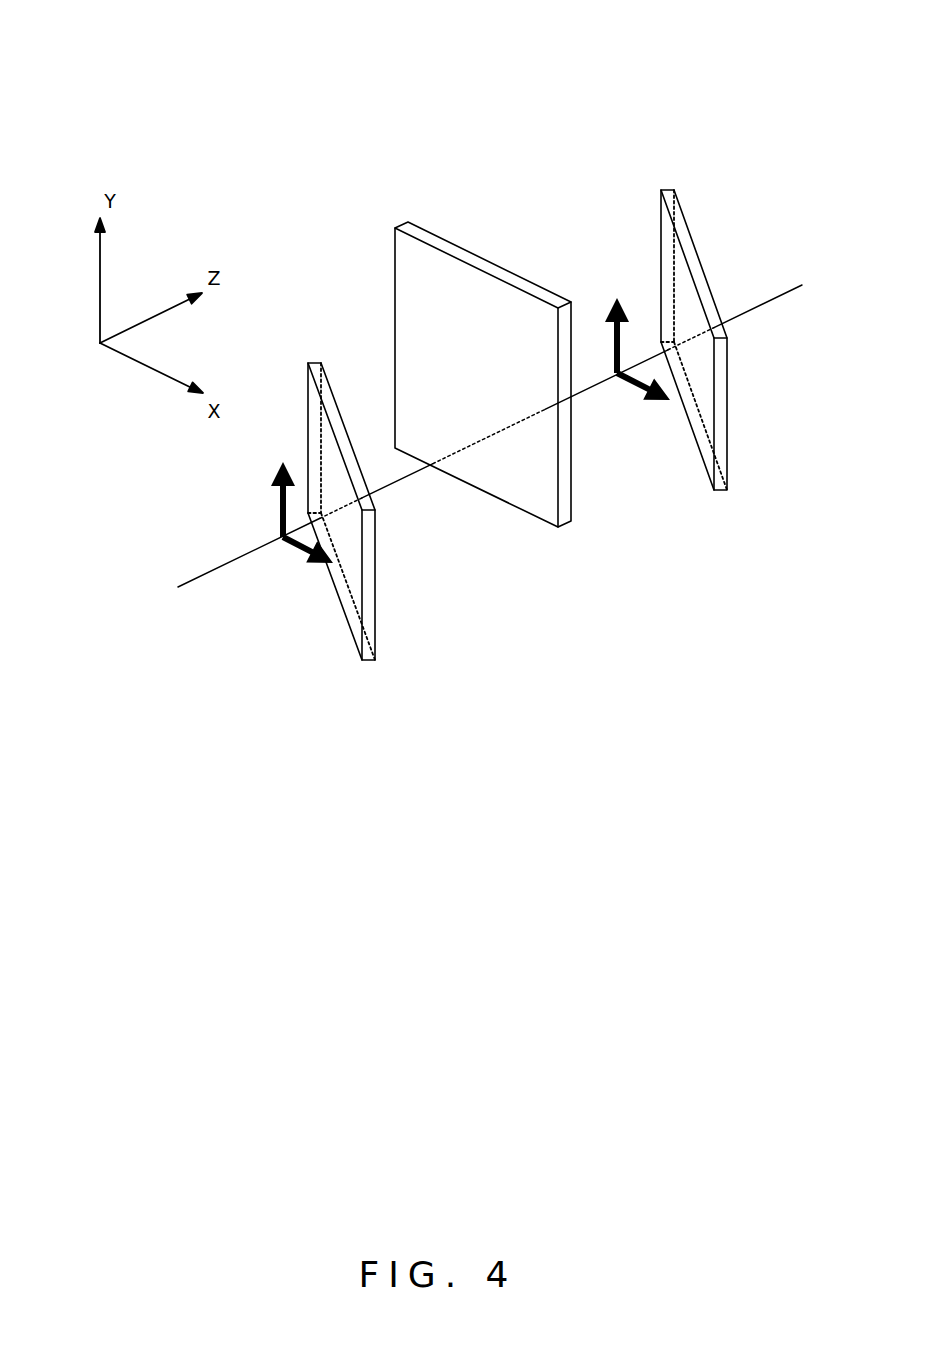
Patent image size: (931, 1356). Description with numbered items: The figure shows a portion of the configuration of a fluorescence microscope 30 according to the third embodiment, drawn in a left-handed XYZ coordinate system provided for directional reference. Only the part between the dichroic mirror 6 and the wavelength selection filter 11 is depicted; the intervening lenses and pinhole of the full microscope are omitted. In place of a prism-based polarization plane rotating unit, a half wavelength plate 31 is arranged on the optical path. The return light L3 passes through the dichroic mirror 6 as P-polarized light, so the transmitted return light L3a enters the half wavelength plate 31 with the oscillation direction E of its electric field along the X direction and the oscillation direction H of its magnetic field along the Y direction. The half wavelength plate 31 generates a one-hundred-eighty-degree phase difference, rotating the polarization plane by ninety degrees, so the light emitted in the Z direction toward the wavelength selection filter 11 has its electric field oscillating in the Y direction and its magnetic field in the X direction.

The fluorescence microscope 30 is at (828, 58).
The dichroic mirror 6 is at (367, 663).
The half wavelength plate 31 is at (533, 497).
The wavelength selection filter 11 is at (718, 493).
The return light L3 is at (235, 560).
The return light L3a is at (395, 481).